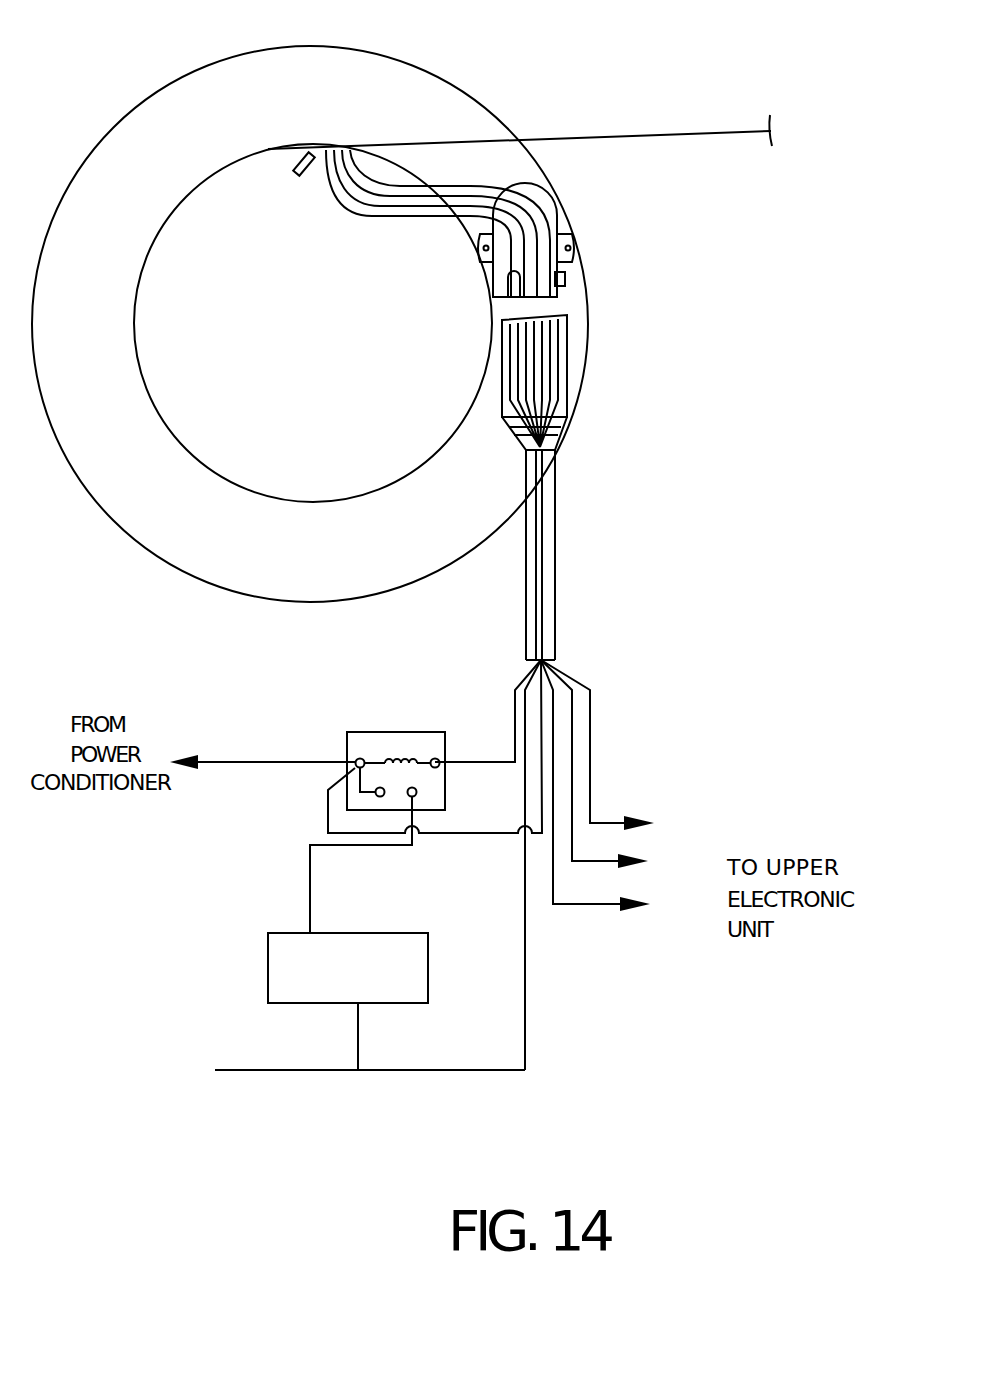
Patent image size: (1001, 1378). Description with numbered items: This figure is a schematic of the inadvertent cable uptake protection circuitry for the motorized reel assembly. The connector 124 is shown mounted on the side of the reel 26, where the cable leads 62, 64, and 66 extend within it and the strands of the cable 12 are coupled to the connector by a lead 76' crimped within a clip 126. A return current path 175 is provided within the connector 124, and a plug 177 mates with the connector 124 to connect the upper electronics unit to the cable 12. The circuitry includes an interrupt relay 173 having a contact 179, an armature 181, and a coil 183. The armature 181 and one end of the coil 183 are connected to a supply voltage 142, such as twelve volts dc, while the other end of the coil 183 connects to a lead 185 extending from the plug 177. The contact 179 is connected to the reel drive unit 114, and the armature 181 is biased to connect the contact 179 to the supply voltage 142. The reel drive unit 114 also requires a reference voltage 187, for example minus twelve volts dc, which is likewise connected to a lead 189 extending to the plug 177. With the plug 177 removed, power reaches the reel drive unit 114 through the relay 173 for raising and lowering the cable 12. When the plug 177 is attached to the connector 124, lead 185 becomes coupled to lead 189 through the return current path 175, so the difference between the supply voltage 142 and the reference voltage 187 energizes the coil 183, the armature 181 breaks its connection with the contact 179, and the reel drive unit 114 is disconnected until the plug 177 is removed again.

The reel 26 is at (438, 67).
The cable 12 is at (713, 133).
The clip 126 is at (298, 172).
The cable lead 66 is at (432, 184).
The cable lead 62 is at (366, 198).
The cable lead 64 is at (390, 207).
The lead 76' is at (418, 223).
The connector 124 is at (576, 272).
The return current path 175 is at (493, 285).
The plug 177 is at (568, 360).
The lead 185 is at (514, 702).
The lead 189 is at (528, 995).
The interrupt relay 173 is at (355, 732).
The armature 181 is at (388, 760).
The coil 183 is at (416, 756).
The contact 179 is at (417, 791).
The supply voltage 142 is at (220, 764).
The reel drive unit 114 is at (378, 933).
The reference voltage 187 is at (250, 1072).